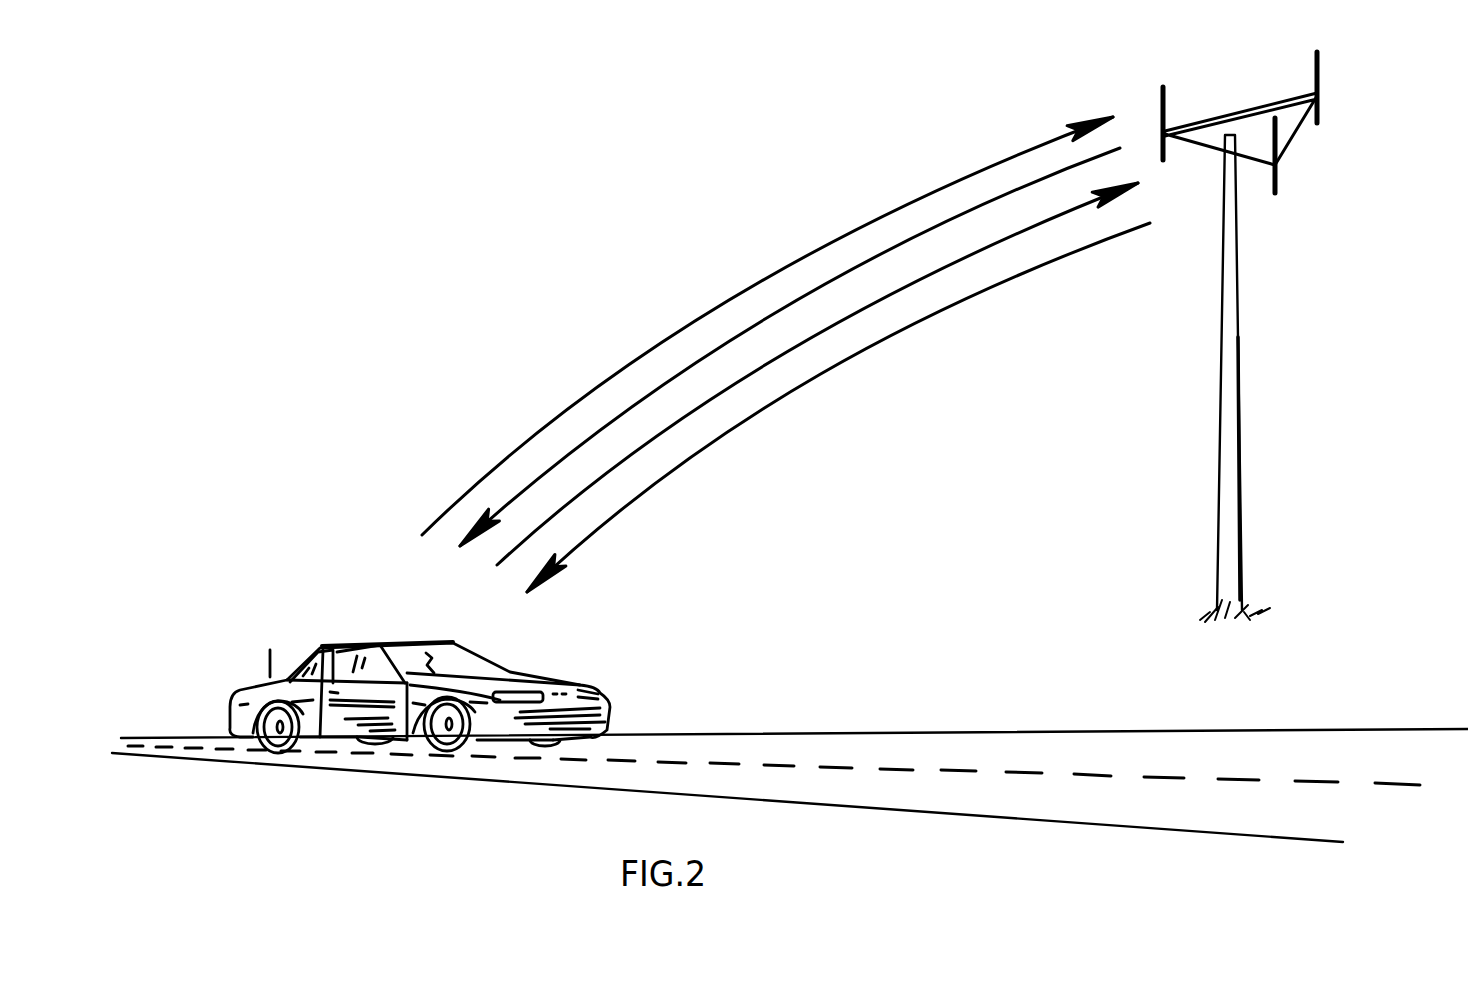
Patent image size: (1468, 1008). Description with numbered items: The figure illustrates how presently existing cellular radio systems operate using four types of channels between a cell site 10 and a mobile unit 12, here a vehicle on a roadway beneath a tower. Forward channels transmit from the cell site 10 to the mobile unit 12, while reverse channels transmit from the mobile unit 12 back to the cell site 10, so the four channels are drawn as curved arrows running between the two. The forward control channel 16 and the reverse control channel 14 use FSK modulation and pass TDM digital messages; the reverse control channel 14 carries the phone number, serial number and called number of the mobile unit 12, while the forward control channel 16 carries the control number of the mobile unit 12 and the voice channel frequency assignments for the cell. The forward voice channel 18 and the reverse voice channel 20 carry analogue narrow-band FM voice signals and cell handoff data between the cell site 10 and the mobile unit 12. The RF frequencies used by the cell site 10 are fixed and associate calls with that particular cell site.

The cell site 10 is at (1338, 99).
The mobile unit 12 is at (363, 640).
The reverse control channel 14 is at (842, 240).
The forward control channel 16 is at (870, 260).
The forward voice channel 18 is at (893, 334).
The reverse voice channel 20 is at (762, 364).